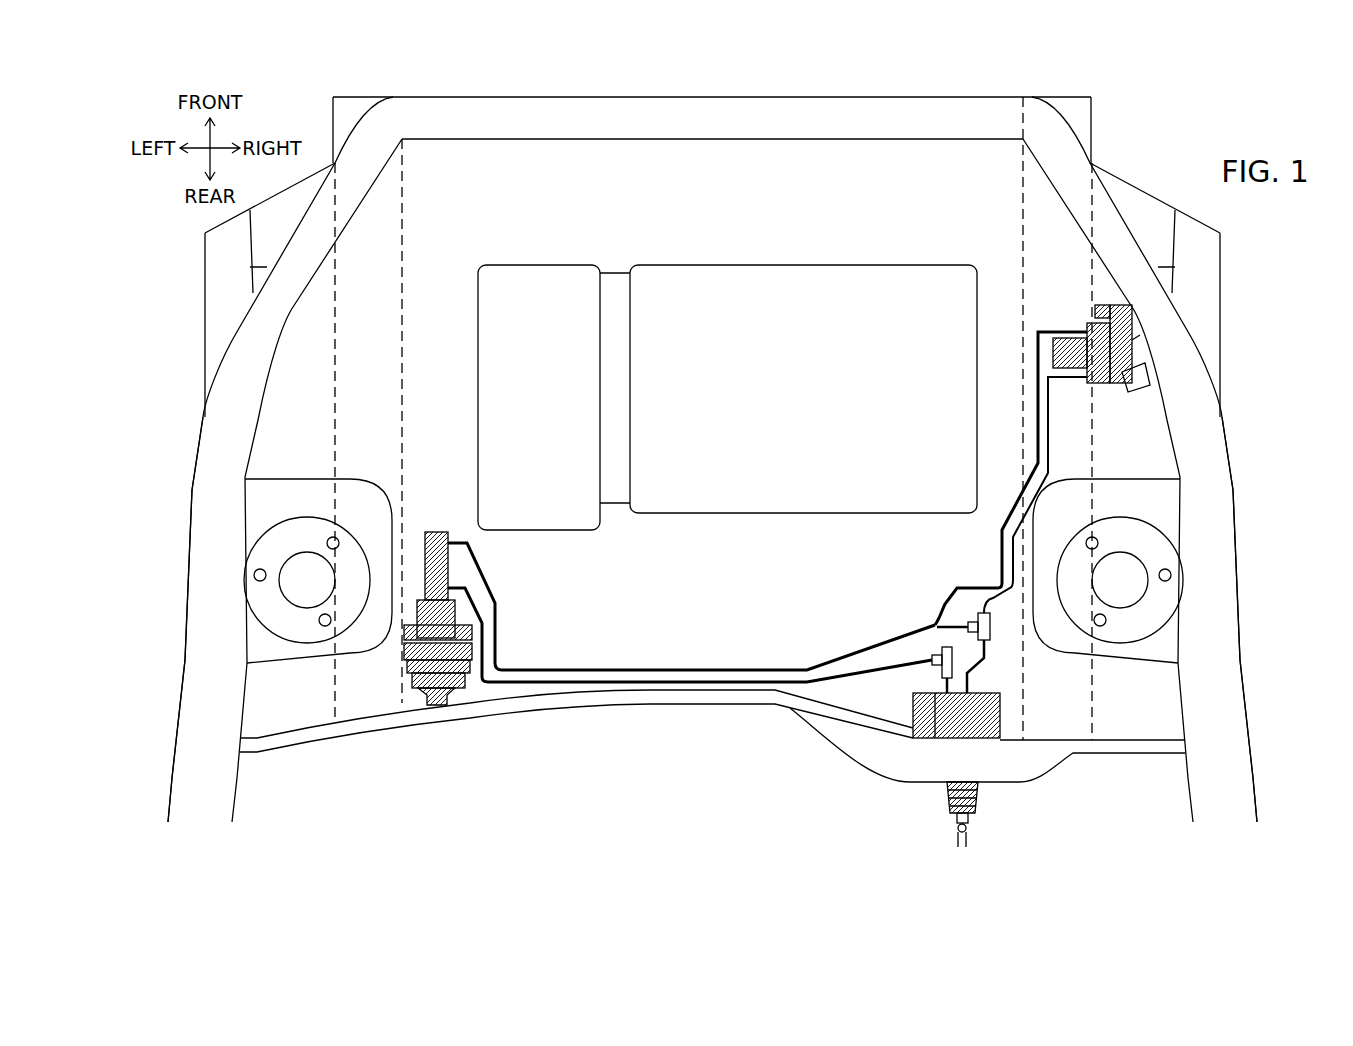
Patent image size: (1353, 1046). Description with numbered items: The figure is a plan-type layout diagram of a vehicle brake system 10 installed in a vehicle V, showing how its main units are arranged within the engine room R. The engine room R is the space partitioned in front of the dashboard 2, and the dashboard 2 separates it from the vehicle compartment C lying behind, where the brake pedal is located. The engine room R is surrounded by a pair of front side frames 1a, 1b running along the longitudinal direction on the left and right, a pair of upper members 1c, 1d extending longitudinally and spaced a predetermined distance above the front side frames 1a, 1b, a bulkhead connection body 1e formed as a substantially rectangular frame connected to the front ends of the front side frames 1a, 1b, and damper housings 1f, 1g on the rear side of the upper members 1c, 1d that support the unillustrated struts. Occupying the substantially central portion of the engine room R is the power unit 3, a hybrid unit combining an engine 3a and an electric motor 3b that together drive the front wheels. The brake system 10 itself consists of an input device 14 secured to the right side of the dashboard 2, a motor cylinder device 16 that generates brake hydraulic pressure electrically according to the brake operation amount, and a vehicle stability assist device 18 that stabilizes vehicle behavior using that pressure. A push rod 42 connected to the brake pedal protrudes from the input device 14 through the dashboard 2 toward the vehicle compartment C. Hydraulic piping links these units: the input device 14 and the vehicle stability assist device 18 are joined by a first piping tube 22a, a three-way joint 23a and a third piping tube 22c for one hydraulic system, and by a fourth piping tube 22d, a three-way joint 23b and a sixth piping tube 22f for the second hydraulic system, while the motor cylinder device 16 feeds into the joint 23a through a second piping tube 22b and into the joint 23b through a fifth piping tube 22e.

The vehicle brake system 10 is at (1119, 162).
The vehicle V is at (1146, 109).
The front side frame 1a is at (335, 448).
The front side frame 1b is at (1023, 240).
The upper member 1c is at (197, 708).
The upper member 1d is at (1230, 708).
The bulkhead connection body 1e is at (722, 125).
The damper housing 1f is at (295, 615).
The damper housing 1g is at (1132, 615).
The dashboard 2 is at (655, 697).
The power unit 3 is at (727, 356).
The engine 3a is at (803, 367).
The electric motor 3b is at (565, 272).
The input device 14 is at (1012, 722).
The motor cylinder device 16 is at (476, 690).
The vehicle stability assist device 18 is at (1115, 396).
The first piping tube 22a is at (942, 688).
The second piping tube 22b is at (485, 640).
The third piping tube 22c is at (1000, 547).
The fourth piping tube 22d is at (980, 690).
The fifth piping tube 22e is at (496, 596).
The sixth piping tube 22f is at (1008, 573).
The joint 23a is at (940, 650).
The joint 23b is at (943, 603).
The push rod 42 is at (950, 810).
The engine room R is at (677, 569).
The vehicle compartment C is at (777, 819).